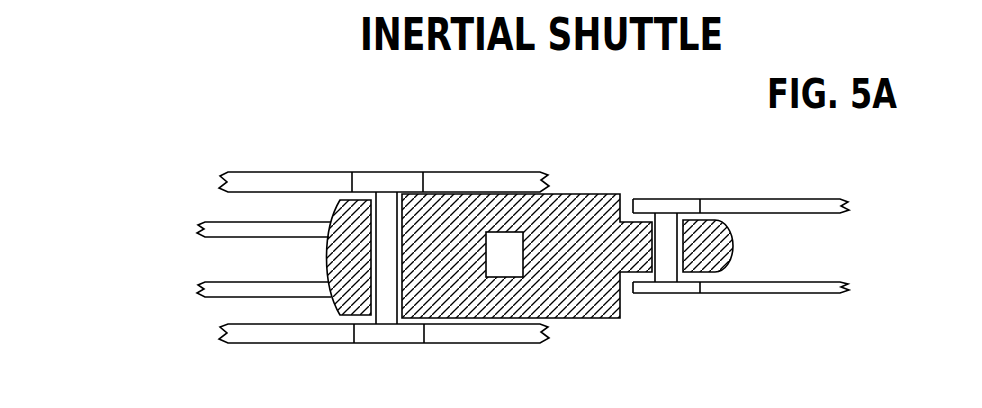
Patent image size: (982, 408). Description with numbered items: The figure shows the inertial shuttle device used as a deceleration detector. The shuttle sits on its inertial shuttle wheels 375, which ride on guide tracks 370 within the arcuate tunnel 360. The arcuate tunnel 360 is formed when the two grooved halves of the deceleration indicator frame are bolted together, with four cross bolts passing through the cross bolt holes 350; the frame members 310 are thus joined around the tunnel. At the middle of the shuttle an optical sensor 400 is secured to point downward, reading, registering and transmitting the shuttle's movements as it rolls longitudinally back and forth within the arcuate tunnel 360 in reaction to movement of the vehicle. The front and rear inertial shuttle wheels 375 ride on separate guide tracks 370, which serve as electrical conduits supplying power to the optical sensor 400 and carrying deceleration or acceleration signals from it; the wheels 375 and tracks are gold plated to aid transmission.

The upper frame member 310 is at (495, 171).
The cross bolt holes 350 is at (488, 342).
The arcuate tunnel 360 is at (215, 222).
The guide tracks 370 is at (278, 172).
The inertial shuttle wheels 375 is at (390, 171).
The optical sensor 400 is at (516, 268).